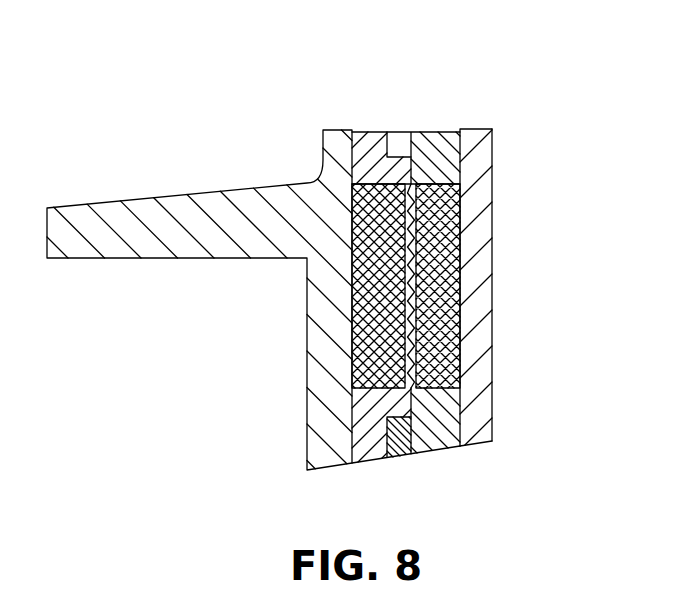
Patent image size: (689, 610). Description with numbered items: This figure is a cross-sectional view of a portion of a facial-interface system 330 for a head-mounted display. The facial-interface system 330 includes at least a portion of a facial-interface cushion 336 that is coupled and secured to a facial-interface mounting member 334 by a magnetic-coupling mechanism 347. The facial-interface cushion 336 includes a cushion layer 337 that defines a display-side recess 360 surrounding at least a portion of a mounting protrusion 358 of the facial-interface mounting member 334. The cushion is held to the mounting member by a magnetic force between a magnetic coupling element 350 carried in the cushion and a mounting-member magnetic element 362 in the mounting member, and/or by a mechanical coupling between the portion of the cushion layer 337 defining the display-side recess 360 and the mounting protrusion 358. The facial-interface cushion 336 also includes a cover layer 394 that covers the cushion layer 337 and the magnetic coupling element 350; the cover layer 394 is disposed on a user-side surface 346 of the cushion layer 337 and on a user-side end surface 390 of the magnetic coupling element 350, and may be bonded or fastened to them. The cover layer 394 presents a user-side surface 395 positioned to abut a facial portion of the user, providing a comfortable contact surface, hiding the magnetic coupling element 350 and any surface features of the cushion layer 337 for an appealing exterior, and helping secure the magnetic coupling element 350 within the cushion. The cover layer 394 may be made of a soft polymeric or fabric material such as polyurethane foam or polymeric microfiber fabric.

The facial-interface system 330 is at (206, 104).
The facial-interface mounting member 334 is at (324, 153).
The facial-interface cushion 336 is at (432, 142).
The cushion layer 337 is at (445, 142).
The user-side surface 346 is at (462, 162).
The magnetic-coupling mechanism 347 is at (517, 438).
The magnetic coupling element 350 is at (440, 225).
The mounting protrusion 358 is at (413, 413).
The display-side recess 360 is at (401, 146).
The mounting-member magnetic element 362 is at (368, 345).
The user-side end surface 390 is at (459, 330).
The cover layer 394 is at (470, 433).
The user-side surface 395 is at (492, 268).